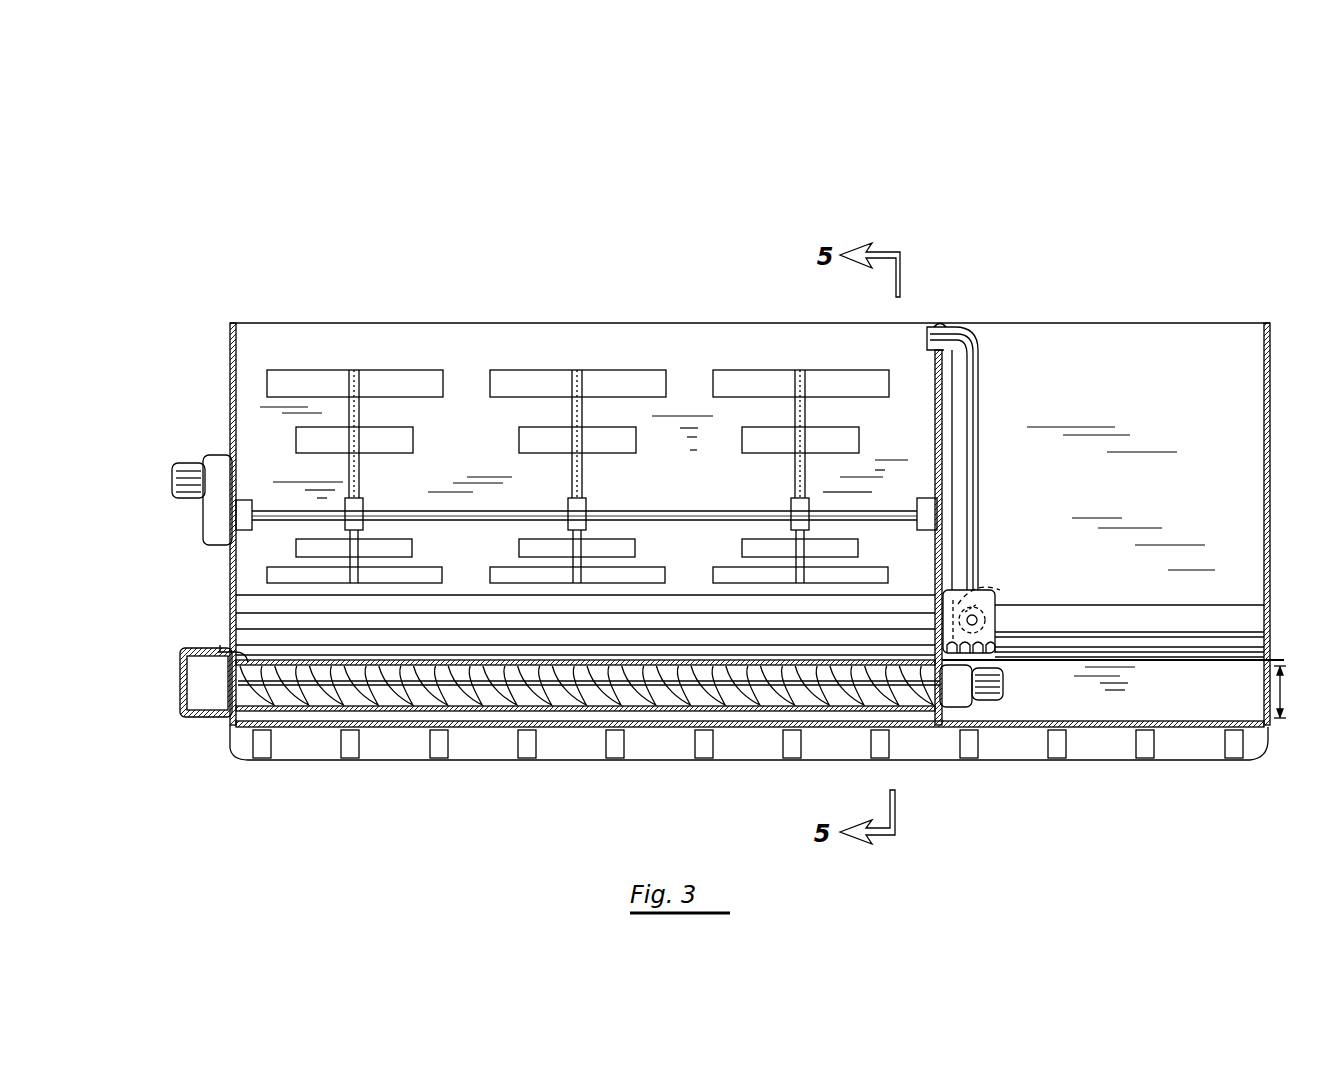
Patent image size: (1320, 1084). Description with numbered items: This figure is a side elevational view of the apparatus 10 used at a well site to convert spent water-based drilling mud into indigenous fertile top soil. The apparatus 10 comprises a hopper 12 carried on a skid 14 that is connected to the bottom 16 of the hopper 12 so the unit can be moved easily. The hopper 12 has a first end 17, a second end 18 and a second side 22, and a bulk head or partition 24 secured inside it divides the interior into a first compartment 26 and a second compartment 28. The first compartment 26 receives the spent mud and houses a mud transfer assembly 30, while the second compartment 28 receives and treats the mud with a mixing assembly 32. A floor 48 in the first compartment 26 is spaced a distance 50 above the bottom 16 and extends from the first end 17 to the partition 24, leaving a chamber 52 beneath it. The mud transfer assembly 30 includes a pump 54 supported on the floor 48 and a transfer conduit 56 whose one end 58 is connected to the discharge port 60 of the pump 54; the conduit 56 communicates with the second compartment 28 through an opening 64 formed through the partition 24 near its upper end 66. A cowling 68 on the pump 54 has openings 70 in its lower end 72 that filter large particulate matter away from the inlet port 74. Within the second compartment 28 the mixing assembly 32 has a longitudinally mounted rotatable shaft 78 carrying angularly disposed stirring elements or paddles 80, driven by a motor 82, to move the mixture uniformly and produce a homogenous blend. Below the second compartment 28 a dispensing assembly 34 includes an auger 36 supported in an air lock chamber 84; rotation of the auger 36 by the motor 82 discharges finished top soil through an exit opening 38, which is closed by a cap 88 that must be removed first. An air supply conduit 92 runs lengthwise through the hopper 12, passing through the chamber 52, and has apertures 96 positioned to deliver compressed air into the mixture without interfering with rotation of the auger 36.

The apparatus 10 is at (947, 188).
The hopper 12 is at (487, 320).
The skid 14 is at (512, 760).
The bottom 16 is at (395, 740).
The first end 17 is at (1275, 385).
The second end 18 is at (230, 365).
The second side 22 is at (374, 352).
The bulk head or partition 24 is at (935, 400).
The first compartment 26 is at (1128, 335).
The second compartment 28 is at (582, 338).
The mud transfer assembly 30 is at (979, 395).
The mixing assembly 32 is at (638, 364).
The dispensing assembly 34 is at (571, 739).
The auger 36 is at (550, 705).
The exit opening 38 is at (228, 656).
The floor 48 is at (1195, 652).
The distance 50 is at (1278, 692).
The chamber 52 is at (1223, 698).
The pump 54 is at (1045, 582).
The transfer conduit 56 is at (978, 465).
The one end 58 is at (980, 588).
The discharge port 60 is at (925, 343).
The opening 64 is at (948, 326).
The upper end 66 is at (975, 326).
The cowling 68 is at (1000, 628).
The openings 70 is at (975, 652).
The lower end 72 is at (997, 637).
The inlet port 74 is at (1000, 612).
The shaft 78 is at (398, 508).
The stirring elements or paddles 80 is at (667, 386).
The motor 82 is at (215, 448).
The air lock chamber 84 is at (580, 700).
The cap 88 is at (192, 722).
The air supply conduit 92 is at (610, 655).
The apertures 96 is at (420, 660).